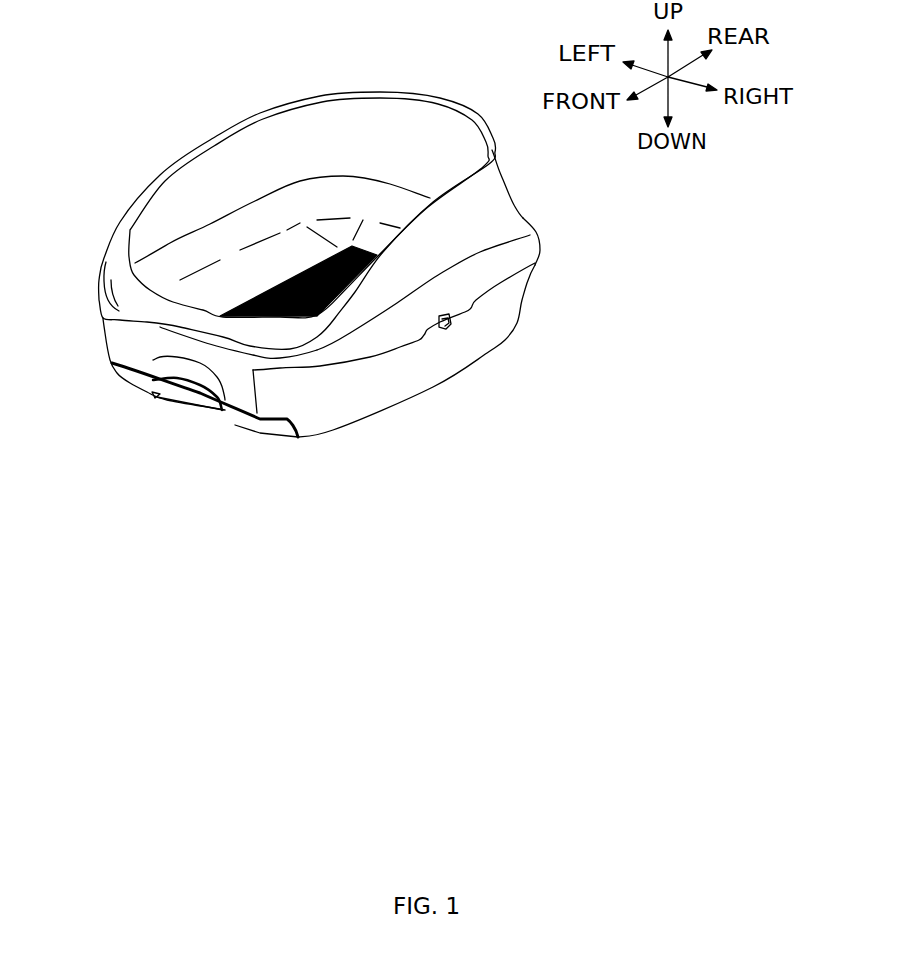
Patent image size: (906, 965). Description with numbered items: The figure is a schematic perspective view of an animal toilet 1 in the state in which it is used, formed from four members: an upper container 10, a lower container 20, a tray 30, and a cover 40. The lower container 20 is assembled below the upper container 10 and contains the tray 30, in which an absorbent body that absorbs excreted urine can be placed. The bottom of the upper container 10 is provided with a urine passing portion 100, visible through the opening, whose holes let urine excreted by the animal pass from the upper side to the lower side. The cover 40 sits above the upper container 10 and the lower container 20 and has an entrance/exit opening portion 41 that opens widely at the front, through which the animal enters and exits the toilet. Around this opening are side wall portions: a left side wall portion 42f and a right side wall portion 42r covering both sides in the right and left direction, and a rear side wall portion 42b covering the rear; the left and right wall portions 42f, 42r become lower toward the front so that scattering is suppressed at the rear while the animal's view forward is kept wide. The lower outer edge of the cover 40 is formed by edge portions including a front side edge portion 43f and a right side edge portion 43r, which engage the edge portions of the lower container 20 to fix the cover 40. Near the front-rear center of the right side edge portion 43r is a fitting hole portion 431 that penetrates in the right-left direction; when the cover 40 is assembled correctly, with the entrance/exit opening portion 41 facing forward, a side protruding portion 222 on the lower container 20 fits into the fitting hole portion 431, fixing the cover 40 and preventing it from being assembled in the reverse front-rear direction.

The animal toilet 1 is at (165, 103).
The upper container 10 is at (175, 247).
The lower container 20 is at (527, 310).
The tray 30 is at (253, 426).
The cover 40 is at (448, 101).
The entrance/exit opening portion 41 is at (103, 318).
The left side wall portion 42f is at (233, 165).
The rear side wall portion 42b is at (382, 123).
The right side wall portion 42r is at (500, 185).
The front side edge portion 43f is at (197, 347).
The right side edge portion 43r is at (520, 243).
The urine passing portion 100 is at (310, 260).
The side protruding portion 222 is at (444, 321).
The fitting hole portion 431 is at (445, 322).